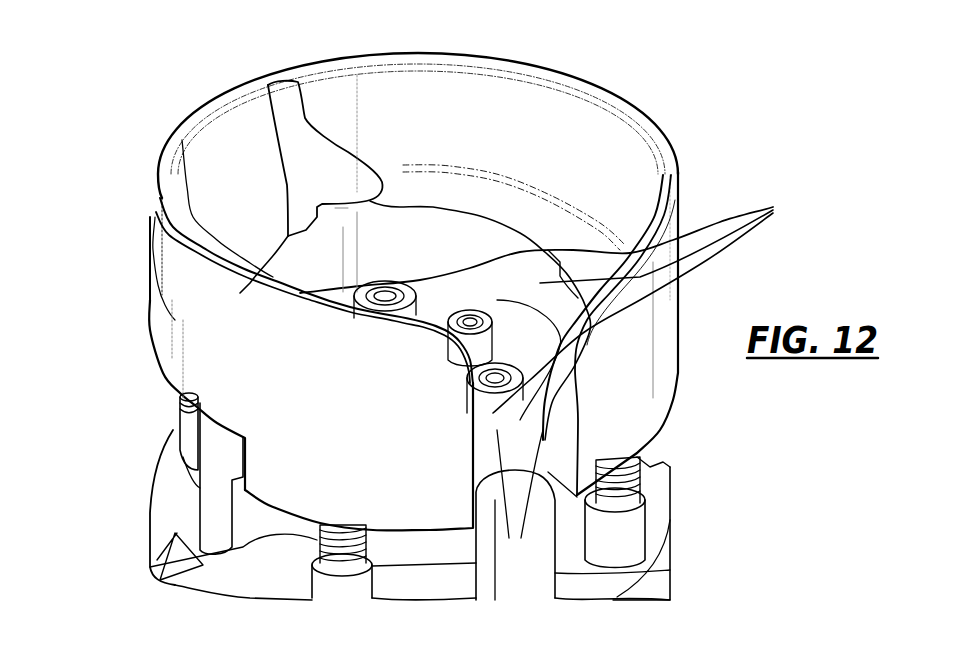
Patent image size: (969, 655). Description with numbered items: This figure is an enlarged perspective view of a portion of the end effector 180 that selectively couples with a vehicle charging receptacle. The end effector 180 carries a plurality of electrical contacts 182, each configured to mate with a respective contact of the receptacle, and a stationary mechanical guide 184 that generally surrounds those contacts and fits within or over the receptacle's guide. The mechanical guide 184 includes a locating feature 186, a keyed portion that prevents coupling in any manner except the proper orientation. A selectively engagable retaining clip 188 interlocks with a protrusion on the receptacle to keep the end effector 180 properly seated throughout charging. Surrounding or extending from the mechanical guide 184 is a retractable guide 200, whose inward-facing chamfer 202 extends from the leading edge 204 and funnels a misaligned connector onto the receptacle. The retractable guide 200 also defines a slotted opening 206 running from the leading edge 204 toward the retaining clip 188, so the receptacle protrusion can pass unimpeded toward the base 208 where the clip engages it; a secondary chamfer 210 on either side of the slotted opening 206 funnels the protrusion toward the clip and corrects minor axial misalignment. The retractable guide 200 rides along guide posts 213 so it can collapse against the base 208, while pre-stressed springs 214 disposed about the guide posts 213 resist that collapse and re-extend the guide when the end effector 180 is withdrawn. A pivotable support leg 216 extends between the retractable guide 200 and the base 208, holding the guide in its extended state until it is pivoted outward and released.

The end effector 180 is at (786, 130).
The electrical contacts 182 is at (655, 302).
The mechanical guide 184 is at (300, 227).
The locating feature 186 is at (296, 90).
The retaining clip 188 is at (613, 600).
The retractable guide 200 is at (148, 303).
The inward-facing chamfer 202 is at (627, 178).
The leading edge 204 is at (597, 93).
The slotted opening 206 is at (455, 358).
The base 208 is at (153, 497).
The secondary chamfer 210 is at (526, 515).
The guide posts 213 is at (332, 527).
The springs 214 is at (200, 571).
The support leg 216 is at (180, 458).